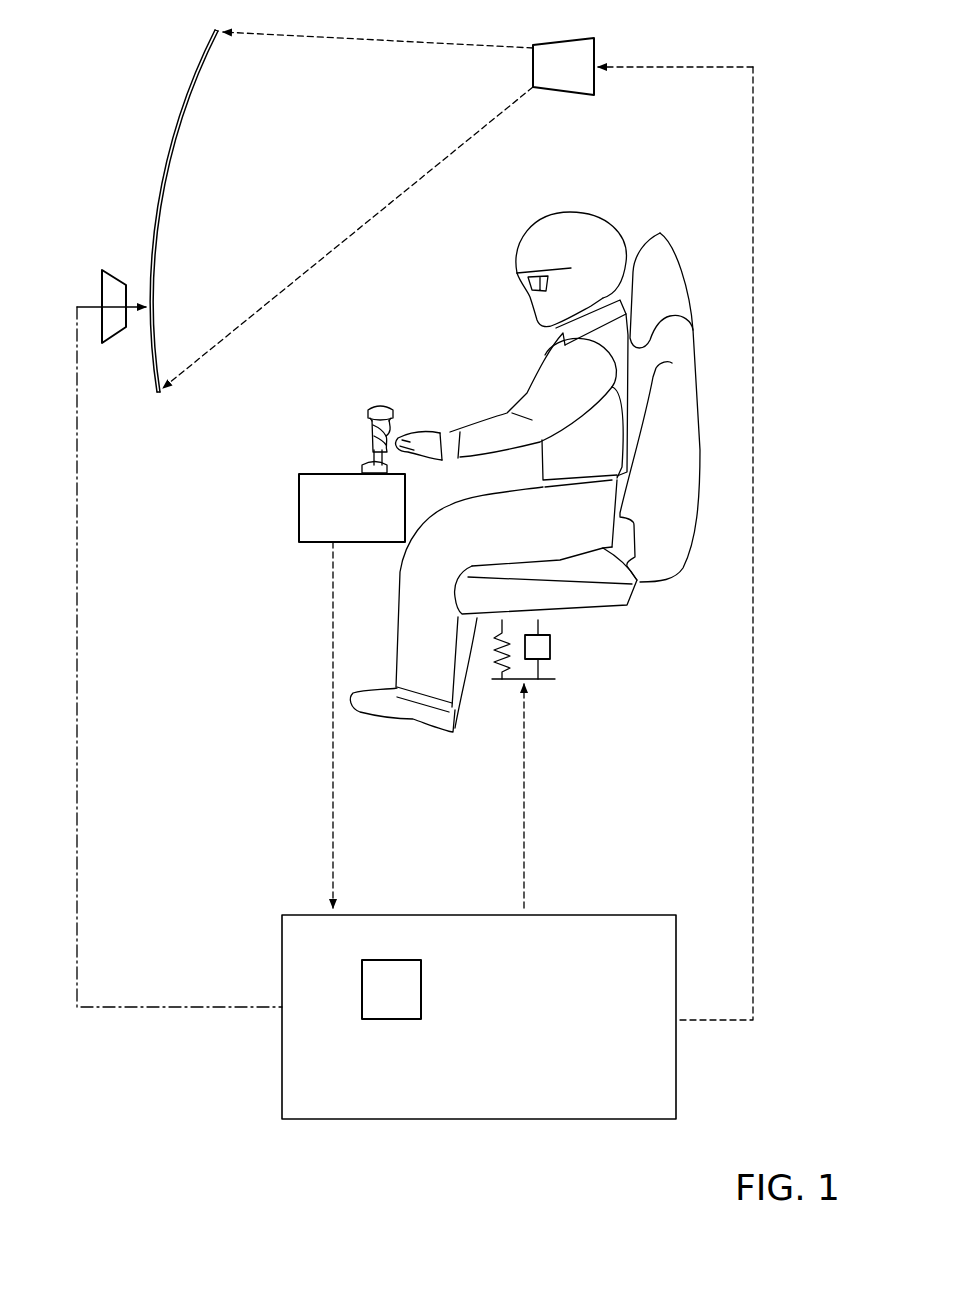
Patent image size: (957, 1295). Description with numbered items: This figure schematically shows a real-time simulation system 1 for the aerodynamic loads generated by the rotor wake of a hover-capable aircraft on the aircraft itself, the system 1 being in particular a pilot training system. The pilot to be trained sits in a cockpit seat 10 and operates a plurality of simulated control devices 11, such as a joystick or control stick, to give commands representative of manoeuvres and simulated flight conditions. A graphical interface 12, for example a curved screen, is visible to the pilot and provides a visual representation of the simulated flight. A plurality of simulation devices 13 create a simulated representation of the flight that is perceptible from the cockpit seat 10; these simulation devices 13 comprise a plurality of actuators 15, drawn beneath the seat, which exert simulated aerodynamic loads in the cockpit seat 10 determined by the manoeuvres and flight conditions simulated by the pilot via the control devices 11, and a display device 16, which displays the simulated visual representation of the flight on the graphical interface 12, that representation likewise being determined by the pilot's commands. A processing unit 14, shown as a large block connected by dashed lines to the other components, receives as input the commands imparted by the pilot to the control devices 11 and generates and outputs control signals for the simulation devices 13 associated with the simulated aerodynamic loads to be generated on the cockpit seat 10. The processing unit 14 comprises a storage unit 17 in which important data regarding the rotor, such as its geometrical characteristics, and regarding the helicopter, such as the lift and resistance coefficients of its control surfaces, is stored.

The real-time simulation system 1 is at (794, 157).
The cockpit seat 10 is at (594, 594).
The simulated control devices 11 is at (384, 400).
The graphical interface 12 is at (174, 147).
The simulation devices 13 is at (557, 764).
The processing unit 14 is at (466, 1105).
The actuators 15 is at (560, 657).
The display device 16 is at (116, 285).
The storage unit 17 is at (372, 1004).